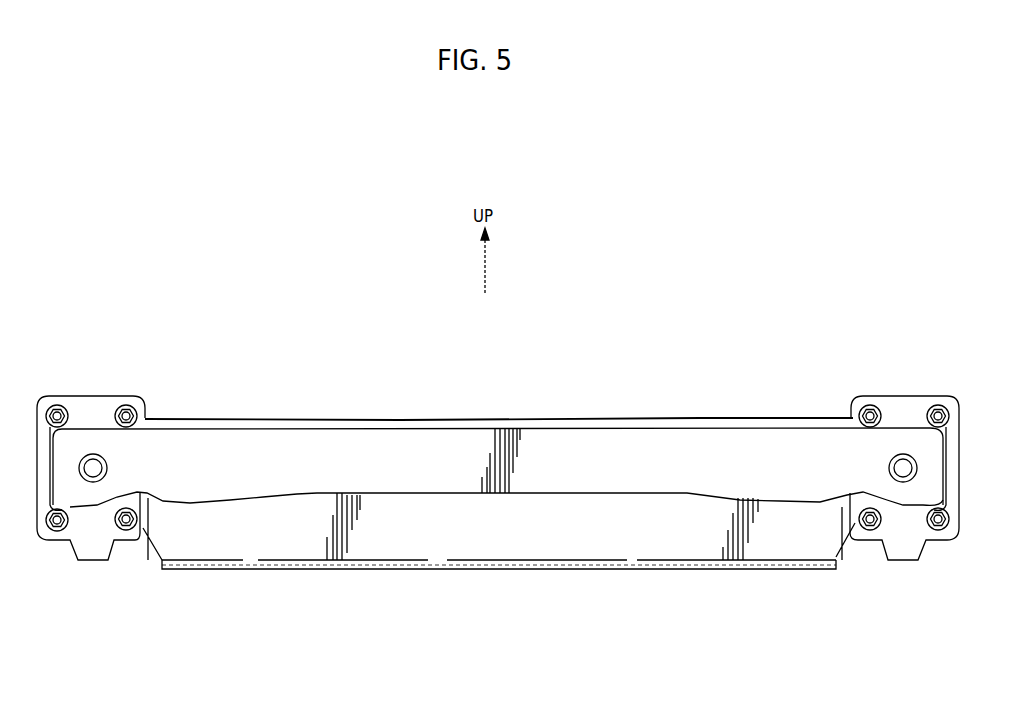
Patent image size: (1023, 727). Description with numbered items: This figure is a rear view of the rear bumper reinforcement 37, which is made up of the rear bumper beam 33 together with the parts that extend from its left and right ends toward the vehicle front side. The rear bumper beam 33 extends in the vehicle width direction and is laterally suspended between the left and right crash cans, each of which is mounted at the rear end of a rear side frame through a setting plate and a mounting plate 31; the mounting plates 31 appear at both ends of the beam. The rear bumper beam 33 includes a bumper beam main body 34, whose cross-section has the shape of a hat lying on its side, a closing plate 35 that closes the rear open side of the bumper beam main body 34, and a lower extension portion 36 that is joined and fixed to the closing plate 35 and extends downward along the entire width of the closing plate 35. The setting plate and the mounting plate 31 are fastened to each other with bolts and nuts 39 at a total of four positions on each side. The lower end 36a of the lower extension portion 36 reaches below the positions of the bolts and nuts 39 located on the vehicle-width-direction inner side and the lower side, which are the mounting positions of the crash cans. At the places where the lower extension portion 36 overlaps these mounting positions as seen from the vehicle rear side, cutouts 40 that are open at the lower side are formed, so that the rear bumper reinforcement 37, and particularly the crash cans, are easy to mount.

The mounting plate 31 is at (96, 395).
The rear bumper beam 33 is at (606, 413).
The bumper beam main body 34 is at (404, 418).
The closing plate 35 is at (448, 482).
The lower extension portion 36 is at (575, 550).
The lower end 36a is at (378, 569).
The rear bumper reinforcement 37 is at (262, 408).
The nut 39 is at (58, 404).
The cutout 40 is at (148, 547).